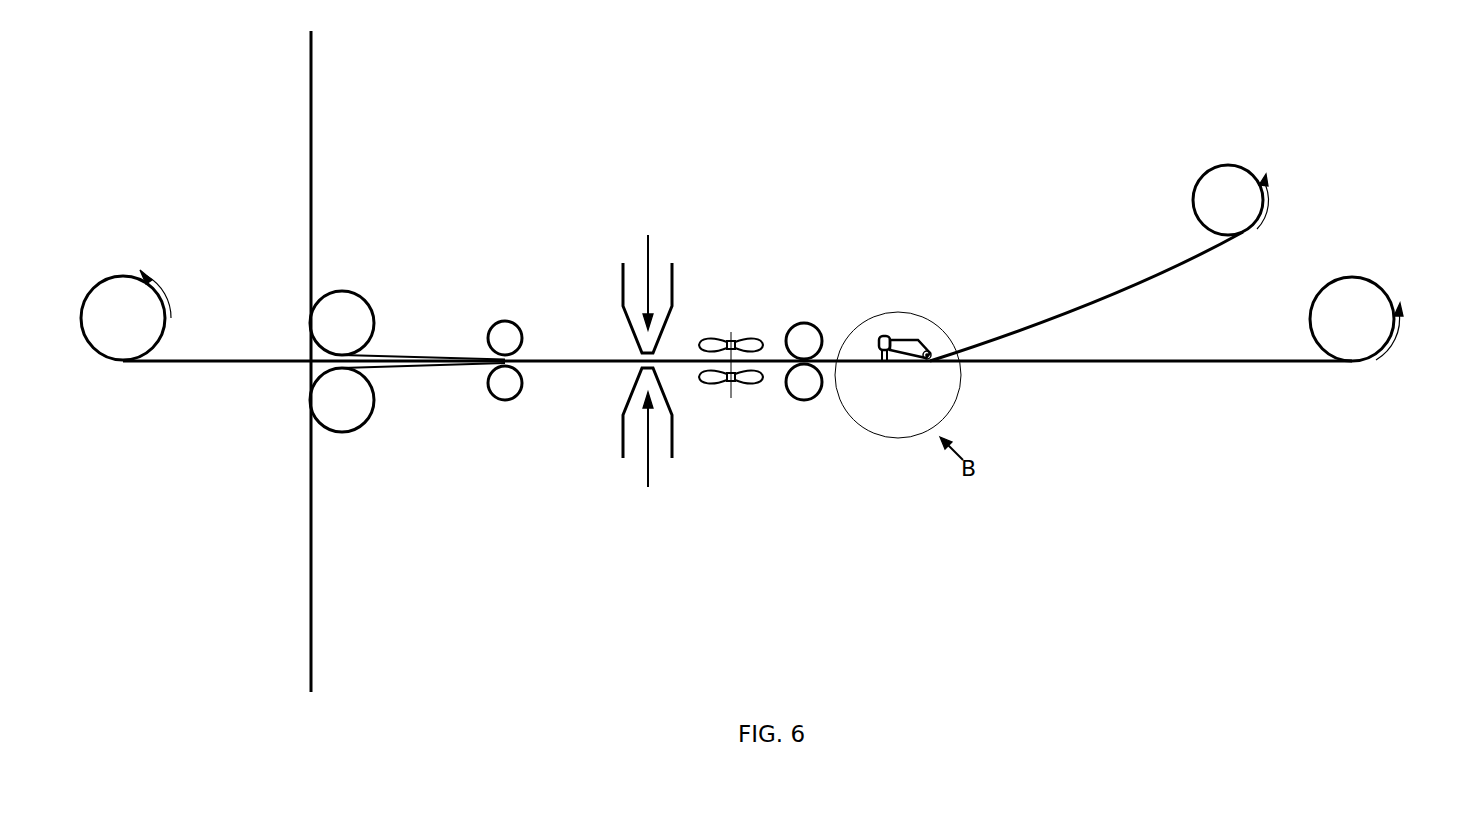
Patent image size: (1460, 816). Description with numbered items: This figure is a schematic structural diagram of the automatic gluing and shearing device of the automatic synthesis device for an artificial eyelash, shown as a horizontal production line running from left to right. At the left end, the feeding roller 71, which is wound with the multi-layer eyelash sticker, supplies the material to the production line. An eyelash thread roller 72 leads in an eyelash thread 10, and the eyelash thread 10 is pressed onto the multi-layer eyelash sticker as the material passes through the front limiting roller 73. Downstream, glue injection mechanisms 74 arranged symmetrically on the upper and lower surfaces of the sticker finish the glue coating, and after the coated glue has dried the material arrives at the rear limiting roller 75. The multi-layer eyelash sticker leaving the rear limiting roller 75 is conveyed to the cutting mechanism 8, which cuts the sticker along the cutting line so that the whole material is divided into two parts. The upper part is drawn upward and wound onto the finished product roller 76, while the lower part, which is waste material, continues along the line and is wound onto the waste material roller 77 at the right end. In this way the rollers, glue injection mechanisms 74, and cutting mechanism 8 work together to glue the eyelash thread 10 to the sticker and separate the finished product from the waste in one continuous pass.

The eyelash thread 10 is at (312, 283).
The feeding roller 71 is at (123, 318).
The eyelash thread roller 72 is at (342, 323).
The front limiting roller 73 is at (505, 338).
The glue injection mechanisms 74 is at (675, 305).
The rear limiting roller 75 is at (804, 341).
The cutting mechanism 8 is at (910, 340).
The finished product roller 76 is at (1228, 200).
The waste material roller 77 is at (1362, 325).